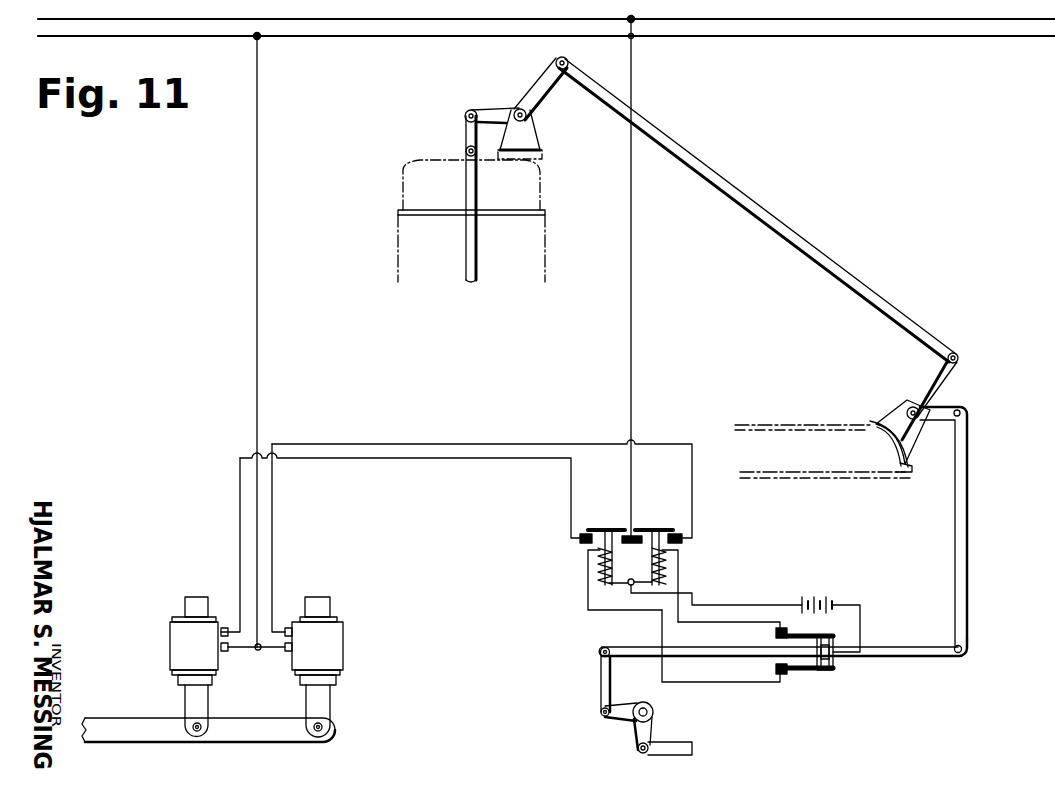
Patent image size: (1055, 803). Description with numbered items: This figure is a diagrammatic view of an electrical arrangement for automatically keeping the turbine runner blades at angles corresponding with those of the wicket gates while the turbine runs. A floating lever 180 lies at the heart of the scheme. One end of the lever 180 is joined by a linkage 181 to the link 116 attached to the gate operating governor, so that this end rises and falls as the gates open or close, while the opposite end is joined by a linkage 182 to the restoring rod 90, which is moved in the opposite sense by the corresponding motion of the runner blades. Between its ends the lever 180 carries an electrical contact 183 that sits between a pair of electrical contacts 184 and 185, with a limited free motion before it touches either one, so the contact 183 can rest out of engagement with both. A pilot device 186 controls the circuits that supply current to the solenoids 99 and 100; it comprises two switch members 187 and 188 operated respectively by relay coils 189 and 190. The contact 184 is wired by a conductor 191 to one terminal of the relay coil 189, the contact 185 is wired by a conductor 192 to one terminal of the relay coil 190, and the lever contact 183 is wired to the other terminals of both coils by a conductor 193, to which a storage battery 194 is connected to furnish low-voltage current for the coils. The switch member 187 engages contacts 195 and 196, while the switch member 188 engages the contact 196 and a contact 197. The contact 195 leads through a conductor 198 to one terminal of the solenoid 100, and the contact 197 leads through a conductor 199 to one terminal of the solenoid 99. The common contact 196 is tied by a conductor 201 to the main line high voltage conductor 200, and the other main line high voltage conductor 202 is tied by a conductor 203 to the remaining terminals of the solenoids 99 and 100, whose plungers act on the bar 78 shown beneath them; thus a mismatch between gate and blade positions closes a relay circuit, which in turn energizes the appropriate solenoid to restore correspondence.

The main line high voltage conductor 200 is at (790, 19).
The main line high voltage conductor 202 is at (868, 36).
The conductor 201 is at (632, 312).
The conductor 203 is at (257, 345).
The restoring rod 90 is at (470, 248).
The conductor 198 is at (425, 444).
The conductor 199 is at (425, 458).
The solenoid 99 is at (199, 667).
The solenoid 100 is at (314, 667).
The bar 78 is at (156, 705).
The contact 197 is at (578, 538).
The switch member 188 is at (622, 511).
The contact 196 is at (633, 552).
The switch member 187 is at (678, 511).
The contact 195 is at (683, 541).
The pilot device 186 is at (601, 586).
The relay coil 190 is at (605, 585).
The relay coil 189 is at (661, 585).
The conductor 193 is at (720, 609).
The storage battery 194 is at (801, 600).
The conductor 191 is at (737, 624).
The conductor 192 is at (738, 684).
The electrical contact 184 is at (836, 640).
The electrical contact 185 is at (836, 668).
The electrical contact 183 is at (824, 652).
The floating lever 180 is at (913, 656).
The linkage 182 is at (956, 521).
The linkage 181 is at (626, 720).
The link 116 is at (690, 757).